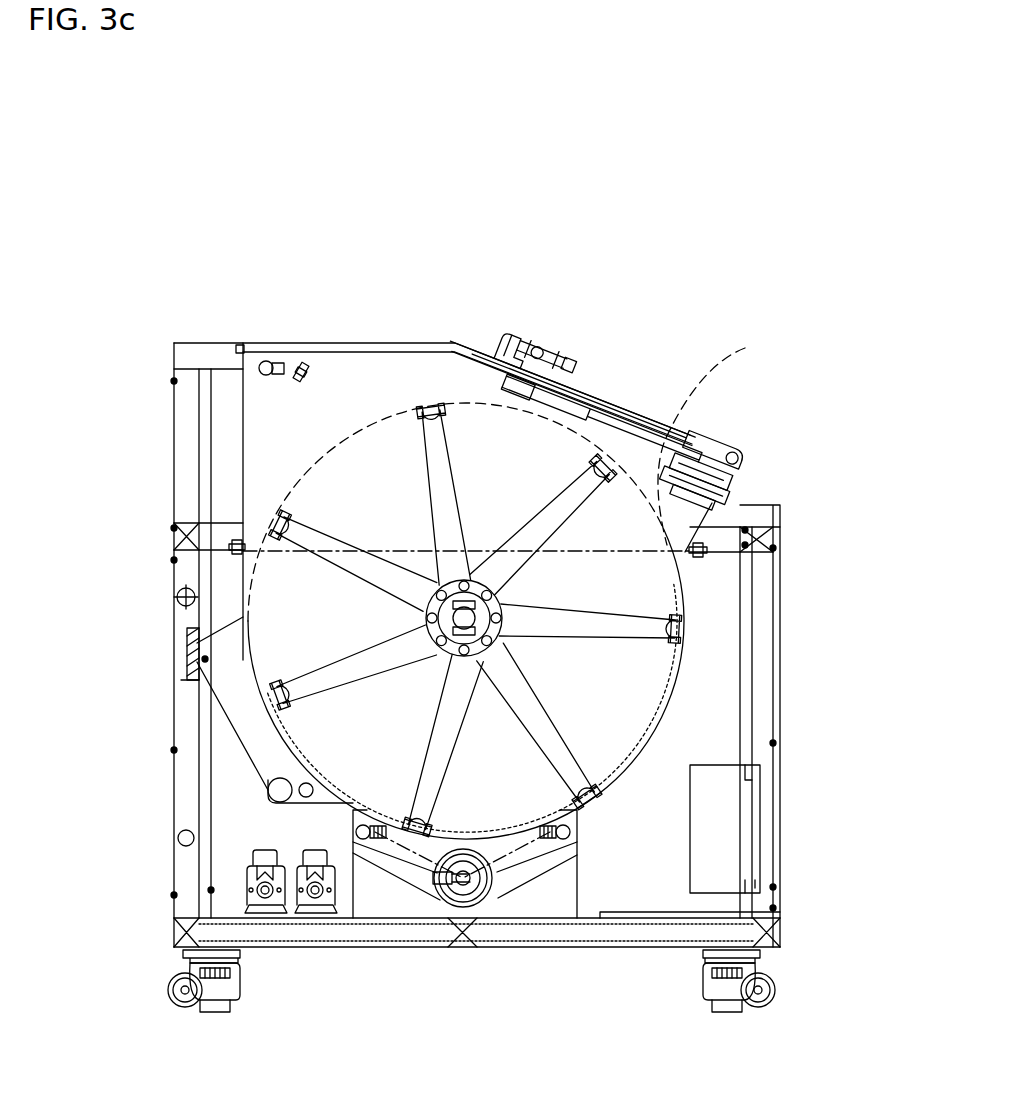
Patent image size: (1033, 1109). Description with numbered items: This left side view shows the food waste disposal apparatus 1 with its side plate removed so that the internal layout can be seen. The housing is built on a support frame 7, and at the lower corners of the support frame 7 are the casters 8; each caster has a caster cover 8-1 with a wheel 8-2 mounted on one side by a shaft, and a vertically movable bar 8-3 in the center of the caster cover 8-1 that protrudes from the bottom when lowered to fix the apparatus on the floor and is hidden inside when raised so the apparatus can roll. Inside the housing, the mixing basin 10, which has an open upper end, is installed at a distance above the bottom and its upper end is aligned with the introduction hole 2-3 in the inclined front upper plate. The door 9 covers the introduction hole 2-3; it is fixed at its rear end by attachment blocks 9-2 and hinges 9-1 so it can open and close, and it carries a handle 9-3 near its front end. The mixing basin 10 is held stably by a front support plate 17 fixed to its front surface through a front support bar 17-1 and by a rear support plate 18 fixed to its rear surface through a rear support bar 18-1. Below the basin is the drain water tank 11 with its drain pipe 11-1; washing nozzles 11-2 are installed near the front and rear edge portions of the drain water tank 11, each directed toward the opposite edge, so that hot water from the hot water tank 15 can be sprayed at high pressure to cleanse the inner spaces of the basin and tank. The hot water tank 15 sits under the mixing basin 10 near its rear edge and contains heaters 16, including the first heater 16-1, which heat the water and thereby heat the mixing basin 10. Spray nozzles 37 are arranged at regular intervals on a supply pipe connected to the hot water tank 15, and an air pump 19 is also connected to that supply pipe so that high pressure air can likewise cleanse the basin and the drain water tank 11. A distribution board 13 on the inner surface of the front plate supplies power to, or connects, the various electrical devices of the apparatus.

The food waste disposal apparatus 1 is at (176, 185).
The spray nozzles 37 is at (298, 366).
The attachment blocks 9-2 is at (500, 333).
The hinges 9-1 is at (513, 347).
The introduction hole 2-3 is at (600, 407).
The door 9 is at (663, 413).
The mixing basin 10 is at (717, 439).
The handle 9-3 is at (746, 437).
The rear support plate 18 is at (238, 546).
The rear support bar 18-1 is at (177, 597).
The front support plate 17 is at (698, 540).
The front support bar 17-1 is at (717, 553).
The hot water tank 15 is at (267, 757).
The heaters 16 is at (273, 795).
The first heater 16-1 is at (194, 654).
The distribution board 13 is at (733, 817).
The support frame 7 is at (733, 932).
The casters 8 is at (870, 985).
The caster cover 8-1 is at (760, 982).
The wheel 8-2 is at (768, 1003).
The vertically movable bar 8-3 is at (740, 1015).
The air pump 19 is at (317, 905).
The drain water tank 11 is at (537, 863).
The drain pipe 11-1 is at (458, 895).
The washing nozzles 11-2 is at (373, 823).